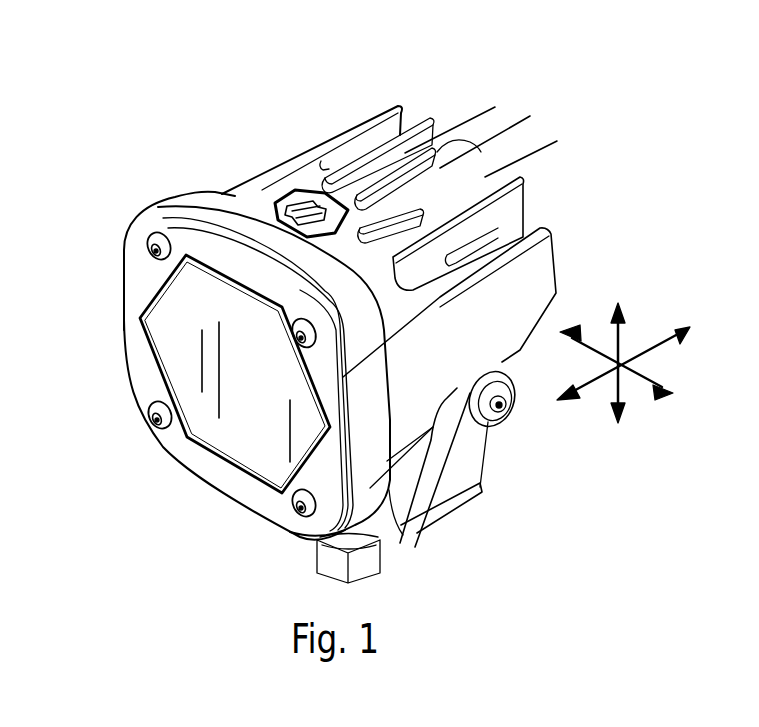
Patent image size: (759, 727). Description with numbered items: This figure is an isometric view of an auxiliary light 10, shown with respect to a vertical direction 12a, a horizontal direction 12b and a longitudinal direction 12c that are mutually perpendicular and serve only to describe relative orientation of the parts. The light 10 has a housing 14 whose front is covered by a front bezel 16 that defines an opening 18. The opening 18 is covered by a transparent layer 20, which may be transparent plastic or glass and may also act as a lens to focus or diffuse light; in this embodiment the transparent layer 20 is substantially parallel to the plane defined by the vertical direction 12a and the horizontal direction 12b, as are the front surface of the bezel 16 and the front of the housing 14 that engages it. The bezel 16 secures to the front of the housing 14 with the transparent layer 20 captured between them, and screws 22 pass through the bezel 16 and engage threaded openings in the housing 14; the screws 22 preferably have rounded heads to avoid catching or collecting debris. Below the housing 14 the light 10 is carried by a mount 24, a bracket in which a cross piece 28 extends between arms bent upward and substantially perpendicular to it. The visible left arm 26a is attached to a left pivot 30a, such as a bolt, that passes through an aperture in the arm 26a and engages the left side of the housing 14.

The auxiliary light 10 is at (216, 102).
The vertical direction 12a is at (617, 382).
The horizontal direction 12b is at (635, 377).
The longitudinal direction 12c is at (646, 347).
The housing 14 is at (564, 283).
The front bezel 16 is at (218, 478).
The opening 18 is at (246, 484).
The transparent layer 20 is at (271, 364).
The screws 22 is at (160, 240).
The mount 24 is at (455, 528).
The left arm 26a is at (480, 468).
The cross piece 28 is at (383, 503).
The left pivot 30a is at (505, 410).